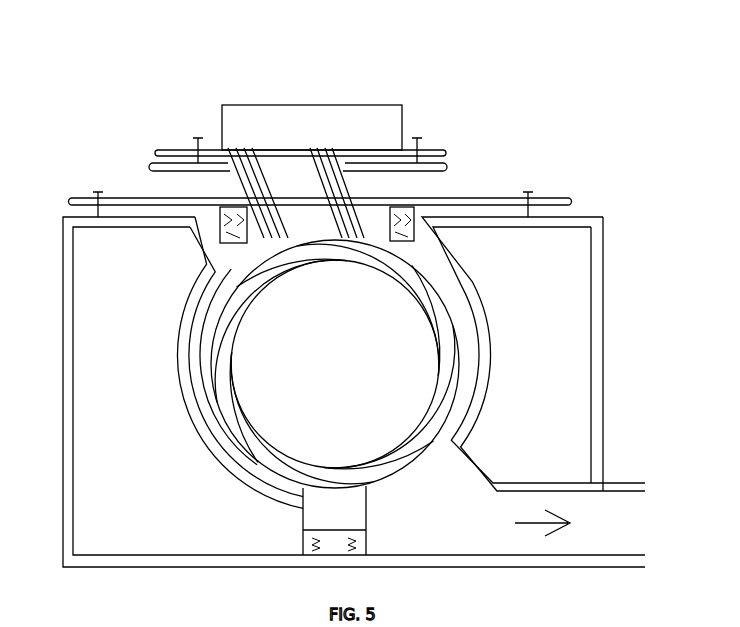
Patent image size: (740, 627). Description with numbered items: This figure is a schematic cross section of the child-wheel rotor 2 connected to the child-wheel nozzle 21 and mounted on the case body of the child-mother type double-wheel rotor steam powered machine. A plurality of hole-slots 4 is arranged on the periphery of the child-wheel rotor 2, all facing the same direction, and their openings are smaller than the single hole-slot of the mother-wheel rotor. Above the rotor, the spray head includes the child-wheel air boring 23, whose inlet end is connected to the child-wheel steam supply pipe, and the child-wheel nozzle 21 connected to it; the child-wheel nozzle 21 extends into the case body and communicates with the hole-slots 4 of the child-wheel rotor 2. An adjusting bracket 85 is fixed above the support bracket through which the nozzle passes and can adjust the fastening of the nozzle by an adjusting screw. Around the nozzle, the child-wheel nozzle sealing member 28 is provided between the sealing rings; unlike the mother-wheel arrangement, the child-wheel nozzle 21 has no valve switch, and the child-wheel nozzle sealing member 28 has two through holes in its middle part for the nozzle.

The child-wheel rotor 2 is at (460, 343).
The hole-slot 4 is at (420, 298).
The child-wheel nozzle 21 is at (240, 165).
The child-wheel air boring 23 is at (340, 125).
The child-wheel nozzle sealing member 28 is at (400, 212).
The adjusting bracket 85 is at (155, 162).